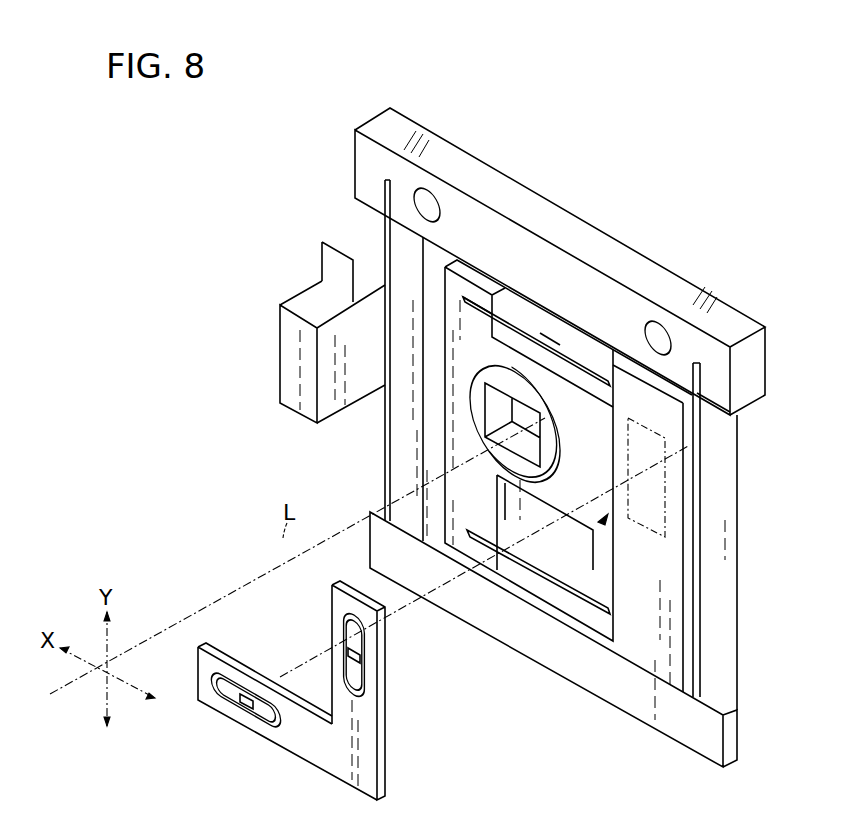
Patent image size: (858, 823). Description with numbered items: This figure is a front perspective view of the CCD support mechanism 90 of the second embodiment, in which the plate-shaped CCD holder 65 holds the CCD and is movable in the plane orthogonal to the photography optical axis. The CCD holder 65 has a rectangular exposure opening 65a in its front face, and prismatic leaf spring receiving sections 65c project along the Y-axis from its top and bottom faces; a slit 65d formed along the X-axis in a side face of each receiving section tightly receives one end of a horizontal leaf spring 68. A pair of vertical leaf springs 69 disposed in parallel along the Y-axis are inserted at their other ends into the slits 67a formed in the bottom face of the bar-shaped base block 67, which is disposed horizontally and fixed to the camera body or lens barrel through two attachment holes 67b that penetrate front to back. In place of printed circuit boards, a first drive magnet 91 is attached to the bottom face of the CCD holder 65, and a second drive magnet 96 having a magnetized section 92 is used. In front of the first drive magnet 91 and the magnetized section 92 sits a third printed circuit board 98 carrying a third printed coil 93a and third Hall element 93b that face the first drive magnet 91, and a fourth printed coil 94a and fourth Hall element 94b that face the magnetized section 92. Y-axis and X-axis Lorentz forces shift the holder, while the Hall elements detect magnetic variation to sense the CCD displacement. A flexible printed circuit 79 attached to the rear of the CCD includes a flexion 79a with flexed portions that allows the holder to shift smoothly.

The CCD support mechanism 90 is at (462, 130).
The base block 67 is at (741, 315).
The slit 67a is at (704, 391).
The attachment hole 67b is at (668, 325).
The second drive magnet 96 is at (737, 735).
The magnetized section 92 is at (665, 462).
The vertical leaf spring 69 is at (385, 487).
The first drive magnet 91 is at (680, 598).
The CCD holder 65 is at (682, 558).
The exposure opening 65a is at (546, 418).
The leaf spring receiving section 65c is at (472, 300).
The slit 65d is at (558, 335).
The horizontal leaf spring 68 is at (597, 335).
The flexible printed circuit 79 is at (284, 357).
The flexion 79a is at (302, 300).
The third printed circuit board 98 is at (382, 782).
The third printed coil 93a is at (216, 702).
The third Hall element 93b is at (244, 710).
The fourth printed coil 94a is at (357, 644).
The fourth Hall element 94b is at (360, 665).